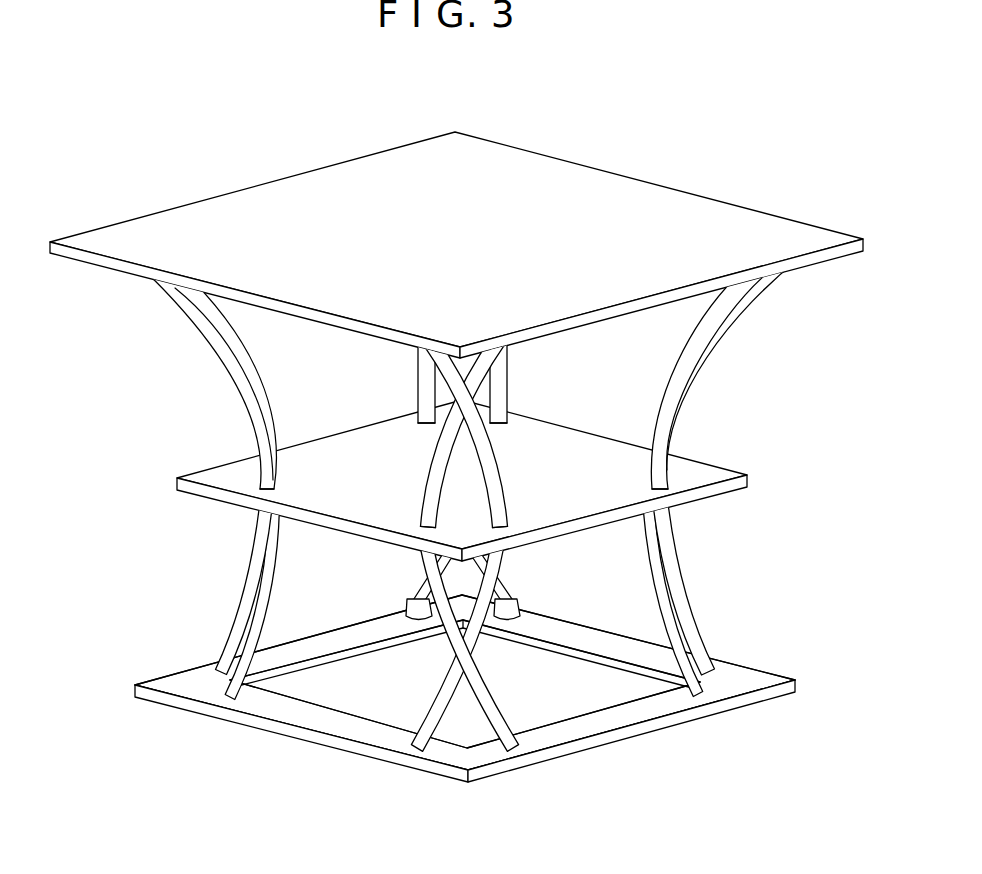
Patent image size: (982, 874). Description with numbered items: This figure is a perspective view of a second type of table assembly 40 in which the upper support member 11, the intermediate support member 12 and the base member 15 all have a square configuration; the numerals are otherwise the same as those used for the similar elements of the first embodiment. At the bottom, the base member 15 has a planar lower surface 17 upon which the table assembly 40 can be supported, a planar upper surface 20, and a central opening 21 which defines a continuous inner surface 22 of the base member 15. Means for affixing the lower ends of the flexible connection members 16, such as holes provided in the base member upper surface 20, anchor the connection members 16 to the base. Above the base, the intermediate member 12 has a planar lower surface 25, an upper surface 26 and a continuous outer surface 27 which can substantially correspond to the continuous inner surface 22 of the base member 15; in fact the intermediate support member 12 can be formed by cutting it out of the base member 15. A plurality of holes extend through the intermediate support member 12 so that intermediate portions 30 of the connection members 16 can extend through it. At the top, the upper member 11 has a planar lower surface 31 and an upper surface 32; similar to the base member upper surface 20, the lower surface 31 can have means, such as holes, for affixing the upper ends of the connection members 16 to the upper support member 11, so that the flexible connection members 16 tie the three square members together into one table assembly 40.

The table assembly 40 is at (702, 127).
The upper member 11 is at (746, 215).
The lower surface 31 is at (97, 268).
The upper surface 32 is at (160, 228).
The intermediate member 12 is at (702, 473).
The lower surface 25 is at (324, 520).
The upper surface 26 is at (563, 437).
The outer surface 27 is at (727, 488).
The flexible connection members 16 is at (225, 367).
The intermediate portions 30 is at (268, 475).
The upper surface 20 is at (756, 667).
The base member 15 is at (332, 637).
The inner surface 22 is at (584, 639).
The central opening 21 is at (352, 700).
The lower surface 17 is at (227, 717).